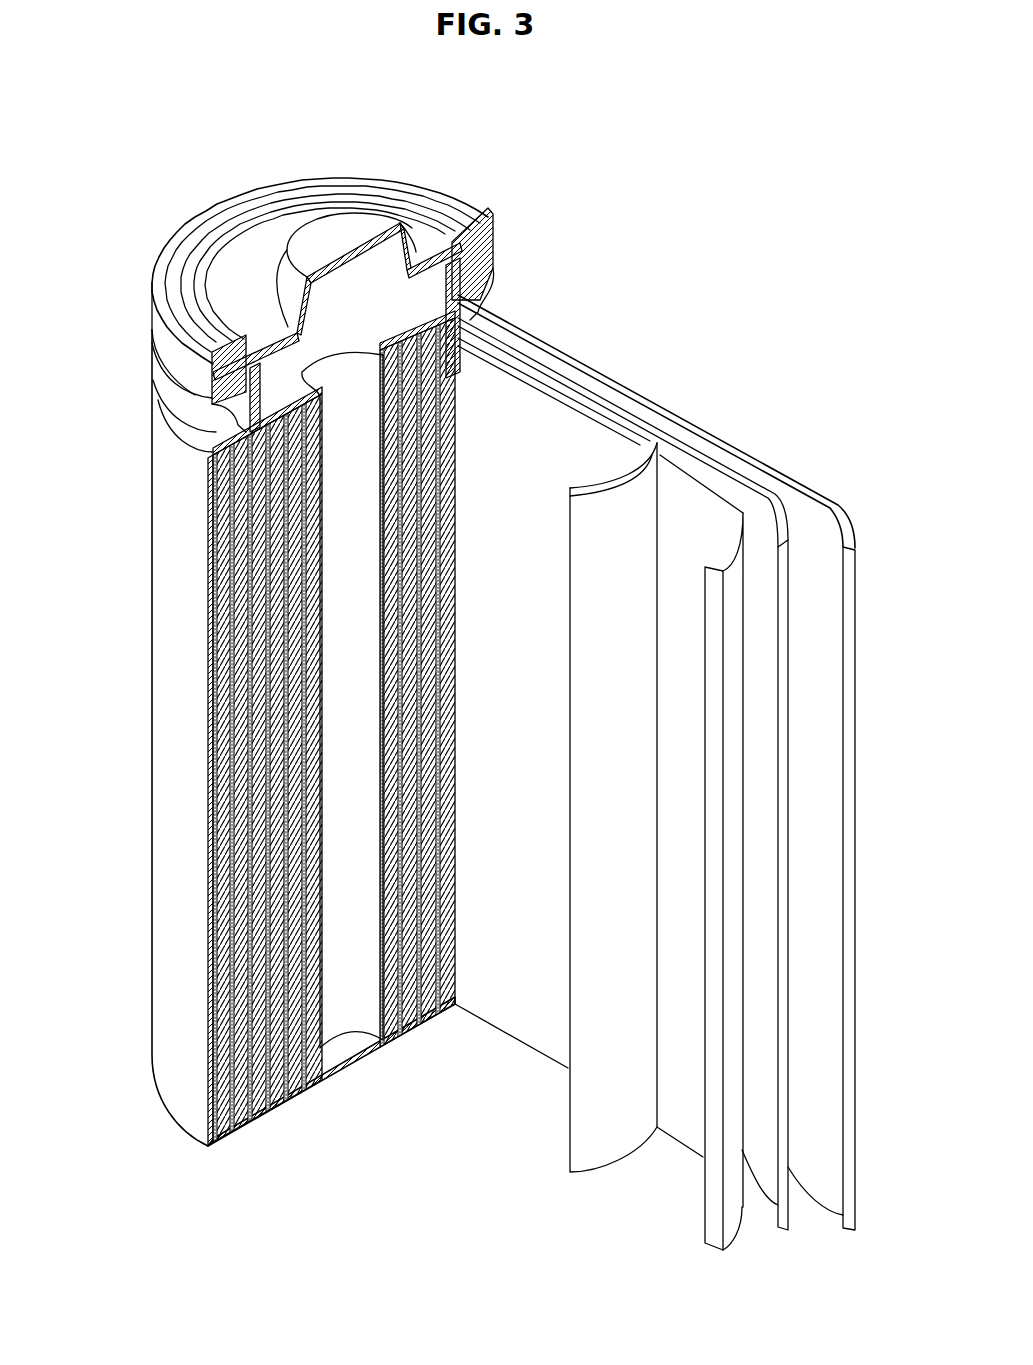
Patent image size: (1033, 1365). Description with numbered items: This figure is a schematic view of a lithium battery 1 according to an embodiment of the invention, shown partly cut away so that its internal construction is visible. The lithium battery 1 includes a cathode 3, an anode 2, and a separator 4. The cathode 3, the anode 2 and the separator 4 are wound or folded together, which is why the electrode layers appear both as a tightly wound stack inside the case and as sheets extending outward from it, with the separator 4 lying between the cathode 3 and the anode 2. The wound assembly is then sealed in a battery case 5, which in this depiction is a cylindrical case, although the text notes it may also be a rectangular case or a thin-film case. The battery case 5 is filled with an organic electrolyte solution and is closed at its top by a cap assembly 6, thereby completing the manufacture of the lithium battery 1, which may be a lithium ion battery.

The lithium battery 1 is at (690, 202).
The anode 2 is at (825, 508).
The cathode 3 is at (727, 500).
The separator 4 is at (614, 493).
The battery case 5 is at (157, 720).
The cap assembly 6 is at (314, 232).